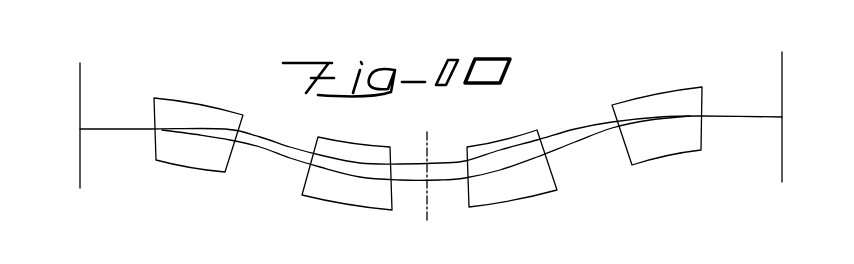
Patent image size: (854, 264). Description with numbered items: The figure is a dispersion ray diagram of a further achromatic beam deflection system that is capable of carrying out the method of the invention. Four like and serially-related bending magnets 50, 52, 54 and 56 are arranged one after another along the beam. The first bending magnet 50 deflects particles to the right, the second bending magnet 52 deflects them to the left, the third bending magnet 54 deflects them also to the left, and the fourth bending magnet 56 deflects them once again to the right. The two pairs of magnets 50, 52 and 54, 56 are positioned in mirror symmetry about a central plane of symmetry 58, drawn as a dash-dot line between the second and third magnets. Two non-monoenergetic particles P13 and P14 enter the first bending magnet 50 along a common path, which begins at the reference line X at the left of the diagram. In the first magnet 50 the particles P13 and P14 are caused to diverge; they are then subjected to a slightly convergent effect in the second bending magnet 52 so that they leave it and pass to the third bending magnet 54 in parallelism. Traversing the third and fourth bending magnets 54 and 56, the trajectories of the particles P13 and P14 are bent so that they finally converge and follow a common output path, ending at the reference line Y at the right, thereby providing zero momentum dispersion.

The first bending magnet 50 is at (192, 103).
The second bending magnet 52 is at (345, 147).
The third bending magnet 54 is at (488, 147).
The fourth bending magnet 56 is at (663, 95).
The central plane of symmetry 58 is at (427, 211).
The non-monoenergetic particle P13 is at (273, 157).
The non-monoenergetic particle P14 is at (261, 130).
The reference line X is at (77, 69).
The reference line Y is at (780, 50).